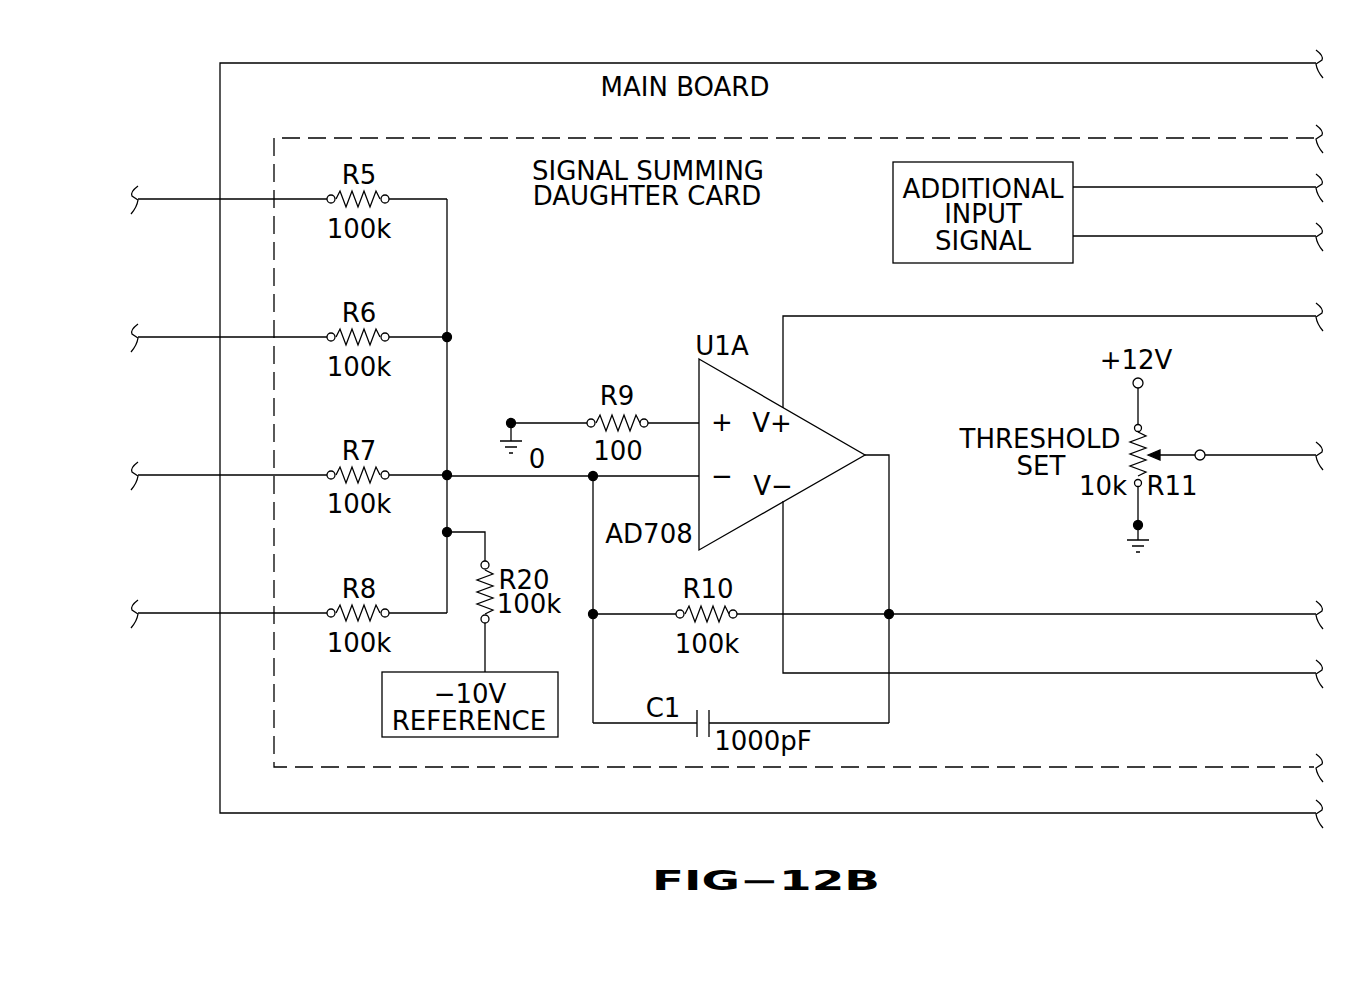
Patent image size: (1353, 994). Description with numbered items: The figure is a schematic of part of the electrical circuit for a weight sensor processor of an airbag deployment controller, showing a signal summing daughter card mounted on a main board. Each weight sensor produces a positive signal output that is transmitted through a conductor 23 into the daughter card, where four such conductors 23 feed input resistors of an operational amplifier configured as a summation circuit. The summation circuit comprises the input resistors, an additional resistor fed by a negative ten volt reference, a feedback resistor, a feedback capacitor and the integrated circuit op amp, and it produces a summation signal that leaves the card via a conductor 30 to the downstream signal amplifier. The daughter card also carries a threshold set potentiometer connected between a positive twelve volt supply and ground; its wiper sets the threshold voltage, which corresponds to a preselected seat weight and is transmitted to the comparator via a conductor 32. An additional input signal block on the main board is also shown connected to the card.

The conductor 23 is at (169, 198).
The conductor 30 is at (989, 613).
The conductor 32 is at (1278, 455).